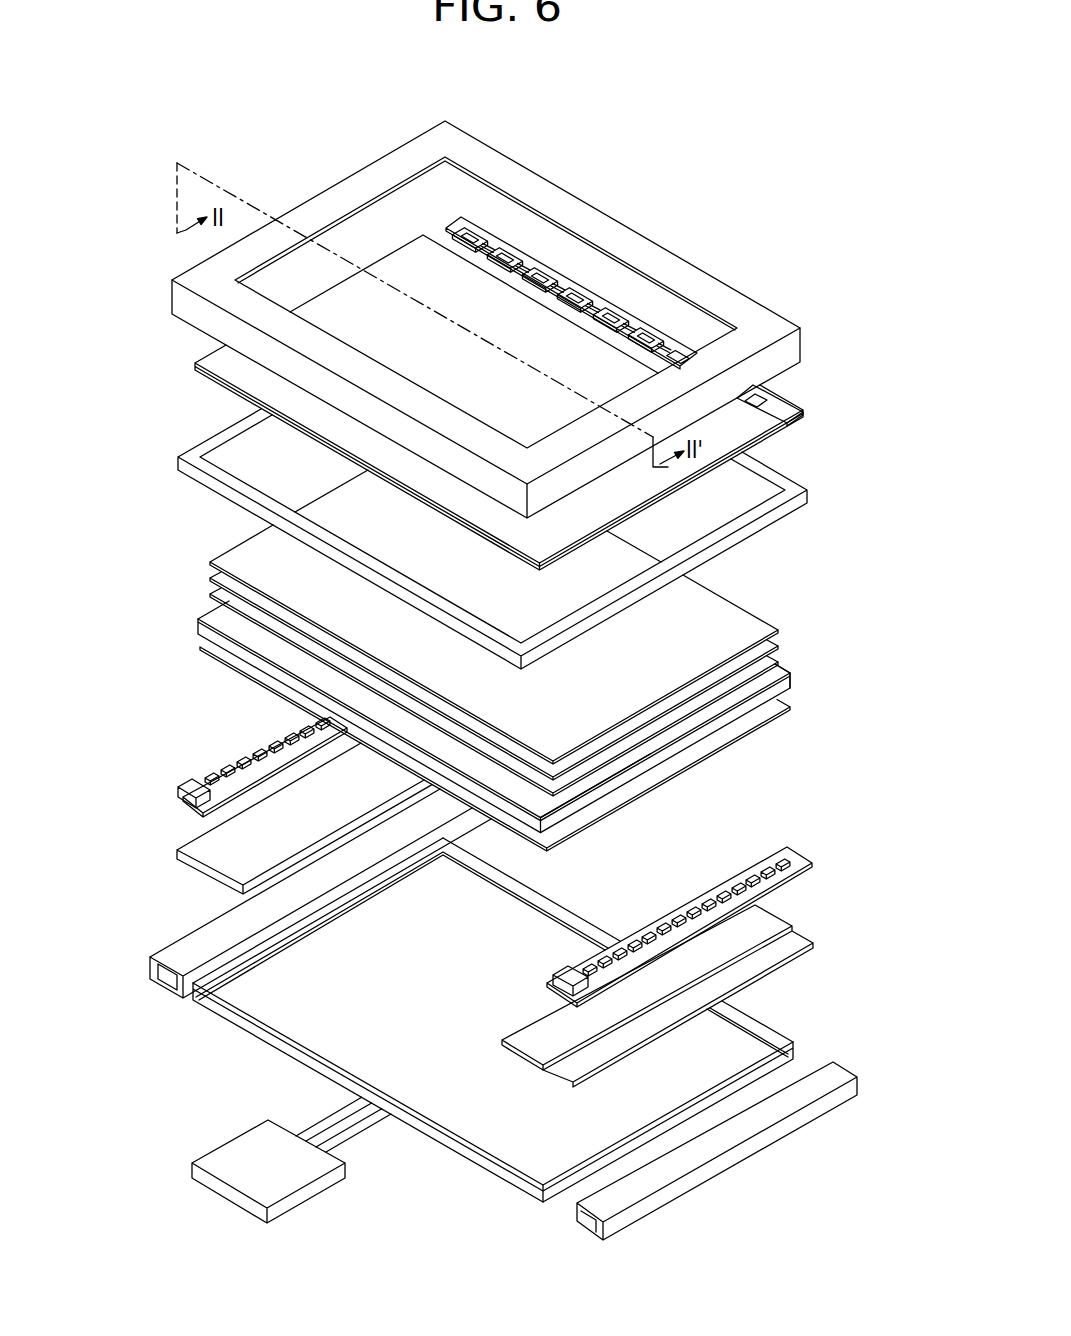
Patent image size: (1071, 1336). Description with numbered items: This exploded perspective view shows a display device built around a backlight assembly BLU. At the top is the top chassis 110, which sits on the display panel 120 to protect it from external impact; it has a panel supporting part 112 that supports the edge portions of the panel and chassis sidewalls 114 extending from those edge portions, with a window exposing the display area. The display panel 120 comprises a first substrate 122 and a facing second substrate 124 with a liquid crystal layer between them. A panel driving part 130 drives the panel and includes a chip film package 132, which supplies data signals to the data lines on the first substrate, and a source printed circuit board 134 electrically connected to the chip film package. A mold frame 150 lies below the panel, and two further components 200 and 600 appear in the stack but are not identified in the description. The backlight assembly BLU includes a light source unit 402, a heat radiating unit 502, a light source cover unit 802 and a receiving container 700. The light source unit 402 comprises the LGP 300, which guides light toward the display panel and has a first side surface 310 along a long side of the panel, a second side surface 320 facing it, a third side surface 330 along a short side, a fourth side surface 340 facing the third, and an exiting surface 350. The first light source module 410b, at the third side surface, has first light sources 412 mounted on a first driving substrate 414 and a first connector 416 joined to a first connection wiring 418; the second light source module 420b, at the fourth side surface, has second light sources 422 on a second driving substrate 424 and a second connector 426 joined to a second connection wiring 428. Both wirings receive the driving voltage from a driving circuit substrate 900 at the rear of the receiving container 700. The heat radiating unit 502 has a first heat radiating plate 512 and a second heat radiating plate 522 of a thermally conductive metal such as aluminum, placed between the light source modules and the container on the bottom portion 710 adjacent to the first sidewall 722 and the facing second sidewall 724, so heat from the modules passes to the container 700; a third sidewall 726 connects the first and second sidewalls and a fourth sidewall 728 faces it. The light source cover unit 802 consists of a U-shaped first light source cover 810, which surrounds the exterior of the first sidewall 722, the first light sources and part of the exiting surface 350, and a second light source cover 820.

The top chassis 110 is at (431, 319).
The panel supporting part 112 is at (212, 272).
The chassis sidewalls 114 is at (171, 298).
The display panel 120 is at (555, 365).
The first substrate 122 is at (787, 408).
The second substrate 124 is at (747, 432).
The panel driving part 130 is at (571, 237).
The chip film package 132 is at (512, 255).
The source printed circuit board 134 is at (566, 282).
The mold frame 150 is at (808, 492).
The optical sheets 200 is at (780, 627).
The LGP 300 is at (489, 707).
The first side surface 310 is at (270, 668).
The second side surface 320 is at (789, 671).
The third side surface 330 is at (687, 745).
The fourth side surface 340 is at (210, 617).
The exiting surface 350 is at (622, 762).
The light source unit 402 is at (198, 759).
The second light source module 420b is at (198, 772).
The second light sources 422 is at (205, 775).
The second driving substrate 424 is at (178, 795).
The second connector 426 is at (188, 805).
The first light source module 410b is at (681, 1054).
The first light sources 412 is at (660, 940).
The first driving substrate 414 is at (630, 963).
The first connector 416 is at (598, 988).
The first connection wiring 418 is at (353, 1137).
The second connection wiring 428 is at (333, 1113).
The heat radiating unit 502 is at (437, 915).
The first heat radiating plate 512 is at (210, 858).
The second heat radiating plate 522 is at (530, 1033).
The reflective sheet 600 is at (790, 707).
The receiving container 700 is at (522, 1060).
The bottom portion 710 is at (513, 1142).
The first sidewall 722 is at (299, 920).
The second sidewall 724 is at (557, 1187).
The third sidewall 726 is at (520, 1188).
The fourth sidewall 728 is at (572, 910).
The light source cover unit 802 is at (459, 1133).
The first light source cover 810 is at (178, 960).
The second light source cover 820 is at (607, 1197).
The driving circuit substrate 900 is at (225, 1192).
The backlight assembly BLU is at (858, 665).